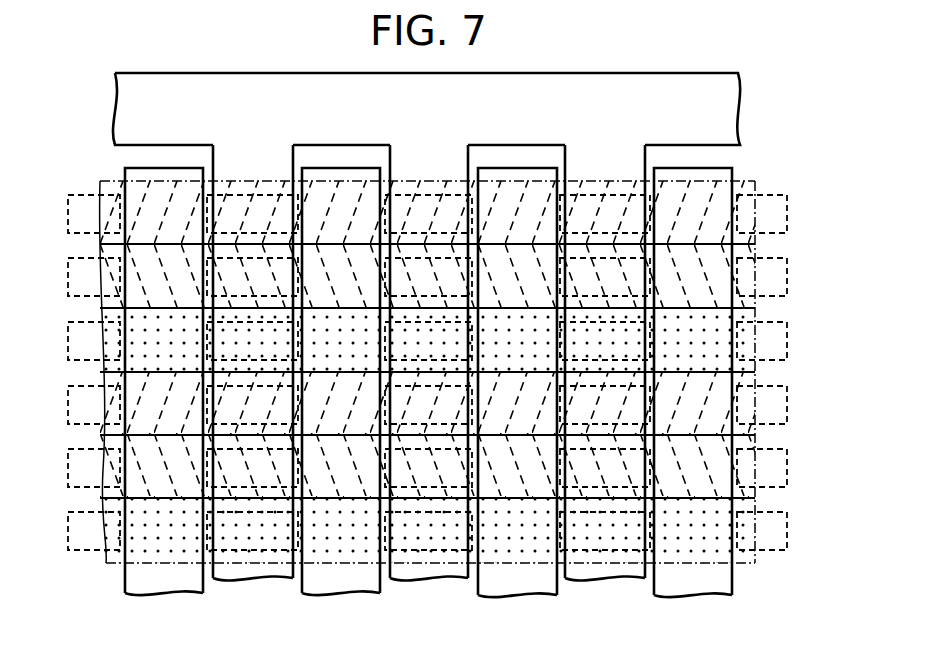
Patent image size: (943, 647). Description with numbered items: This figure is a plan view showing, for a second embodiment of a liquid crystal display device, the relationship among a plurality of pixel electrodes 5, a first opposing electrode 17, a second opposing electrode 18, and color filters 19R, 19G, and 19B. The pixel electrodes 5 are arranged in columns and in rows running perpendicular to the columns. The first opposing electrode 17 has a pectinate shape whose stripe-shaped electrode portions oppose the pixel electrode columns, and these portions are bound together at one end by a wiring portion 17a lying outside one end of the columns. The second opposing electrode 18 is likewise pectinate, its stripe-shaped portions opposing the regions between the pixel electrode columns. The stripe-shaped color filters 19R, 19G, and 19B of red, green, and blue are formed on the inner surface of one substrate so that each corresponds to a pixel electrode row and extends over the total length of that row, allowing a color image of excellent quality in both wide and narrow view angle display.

The pixel electrode 5 is at (68, 520).
The first opposing electrode 17 is at (255, 572).
The wiring portion 17a is at (742, 100).
The second opposing electrode 18 is at (142, 578).
The color filter 19R is at (756, 218).
The color filter 19G is at (756, 284).
The color filter 19B is at (756, 345).